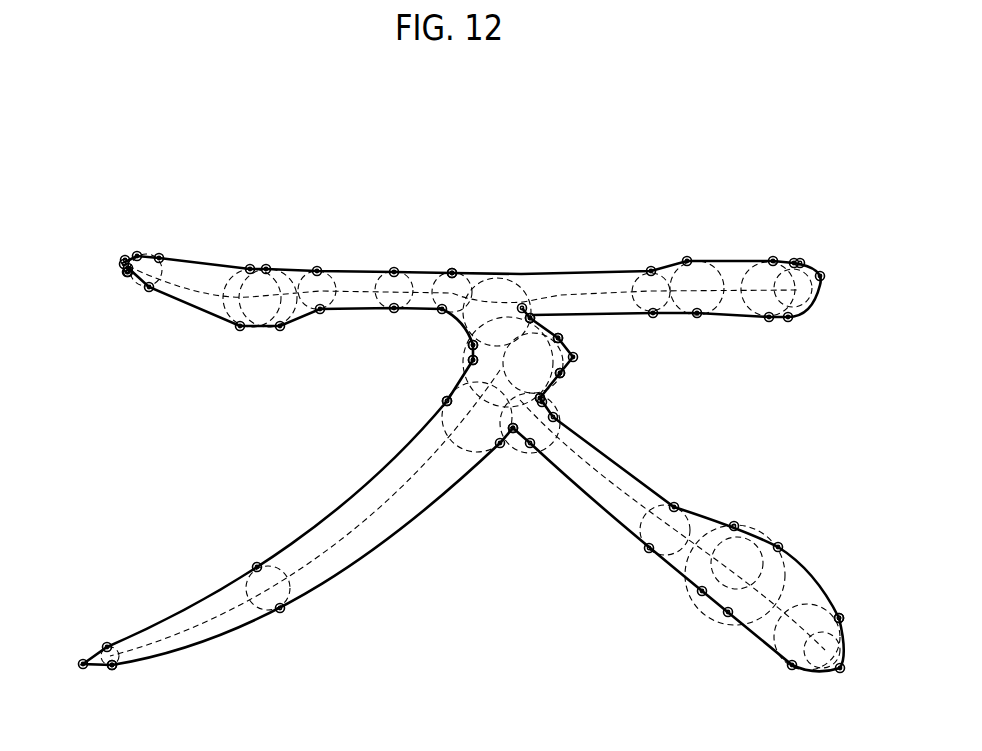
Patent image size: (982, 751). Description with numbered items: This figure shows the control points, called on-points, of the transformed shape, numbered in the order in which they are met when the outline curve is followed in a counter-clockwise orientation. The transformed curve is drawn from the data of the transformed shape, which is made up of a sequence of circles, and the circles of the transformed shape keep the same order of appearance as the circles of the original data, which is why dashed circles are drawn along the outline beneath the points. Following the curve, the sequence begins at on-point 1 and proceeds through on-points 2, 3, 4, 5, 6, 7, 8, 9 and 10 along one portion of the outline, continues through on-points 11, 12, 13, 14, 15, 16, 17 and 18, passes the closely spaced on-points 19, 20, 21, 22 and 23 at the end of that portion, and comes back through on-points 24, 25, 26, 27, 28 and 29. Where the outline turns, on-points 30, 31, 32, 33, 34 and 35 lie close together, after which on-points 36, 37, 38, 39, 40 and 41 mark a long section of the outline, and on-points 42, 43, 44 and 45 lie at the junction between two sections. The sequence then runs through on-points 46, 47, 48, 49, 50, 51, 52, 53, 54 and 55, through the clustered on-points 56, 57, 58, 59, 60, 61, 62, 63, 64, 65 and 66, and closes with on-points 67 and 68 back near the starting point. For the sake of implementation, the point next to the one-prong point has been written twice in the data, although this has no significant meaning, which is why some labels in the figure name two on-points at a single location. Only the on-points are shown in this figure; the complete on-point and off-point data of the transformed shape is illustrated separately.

The on-point 1 is at (603, 235).
The on-point 2 is at (697, 327).
The on-point 3 is at (767, 331).
The on-point 4 is at (788, 331).
The on-point 5 is at (830, 267).
The on-point 6 is at (794, 248).
The on-point 7 is at (797, 234).
The on-point 8 is at (772, 247).
The on-point 9 is at (687, 247).
The on-point 10 is at (649, 257).
The on-point 11 is at (453, 257).
The on-point 12 is at (455, 243).
The on-point 13 is at (395, 258).
The on-point 14 is at (319, 258).
The on-point 15 is at (275, 257).
The on-point 16 is at (243, 257).
The on-point 17 is at (169, 246).
The on-point 18 is at (137, 242).
The on-point 19 is at (122, 258).
The on-point 20 is at (120, 263).
The on-point 21 is at (124, 270).
The on-point 22 is at (92, 303).
The on-point 23 is at (125, 278).
The on-point 24 is at (150, 301).
The on-point 25 is at (237, 340).
The on-point 26 is at (278, 340).
The on-point 27 is at (320, 324).
The on-point 28 is at (394, 323).
The on-point 29 is at (440, 324).
The on-point 30 is at (473, 345).
The on-point 31 is at (473, 345).
The on-point 32 is at (473, 360).
The on-point 33 is at (473, 360).
The on-point 34 is at (447, 401).
The on-point 35 is at (447, 401).
The on-point 36 is at (250, 554).
The on-point 37 is at (103, 635).
The on-point 38 is at (68, 667).
The on-point 39 is at (115, 682).
The on-point 40 is at (115, 694).
The on-point 41 is at (289, 622).
The on-point 42 is at (495, 457).
The on-point 43 is at (513, 432).
The on-point 44 is at (531, 457).
The on-point 45 is at (526, 463).
The on-point 46 is at (637, 561).
The on-point 47 is at (689, 602).
The on-point 48 is at (718, 626).
The on-point 49 is at (790, 682).
The on-point 50 is at (855, 674).
The on-point 51 is at (850, 603).
The on-point 52 is at (850, 590).
The on-point 53 is at (787, 532).
The on-point 54 is at (737, 511).
The on-point 55 is at (679, 494).
The on-point 56 is at (571, 417).
The on-point 57 is at (547, 406).
The on-point 58 is at (545, 398).
The on-point 59 is at (540, 398).
The on-point 60 is at (594, 376).
The on-point 61 is at (560, 373).
The on-point 62 is at (590, 356).
The on-point 63 is at (558, 338).
The on-point 64 is at (558, 338).
The on-point 65 is at (530, 318).
The on-point 66 is at (530, 318).
The on-point 67 is at (522, 308).
The on-point 68 is at (653, 313).